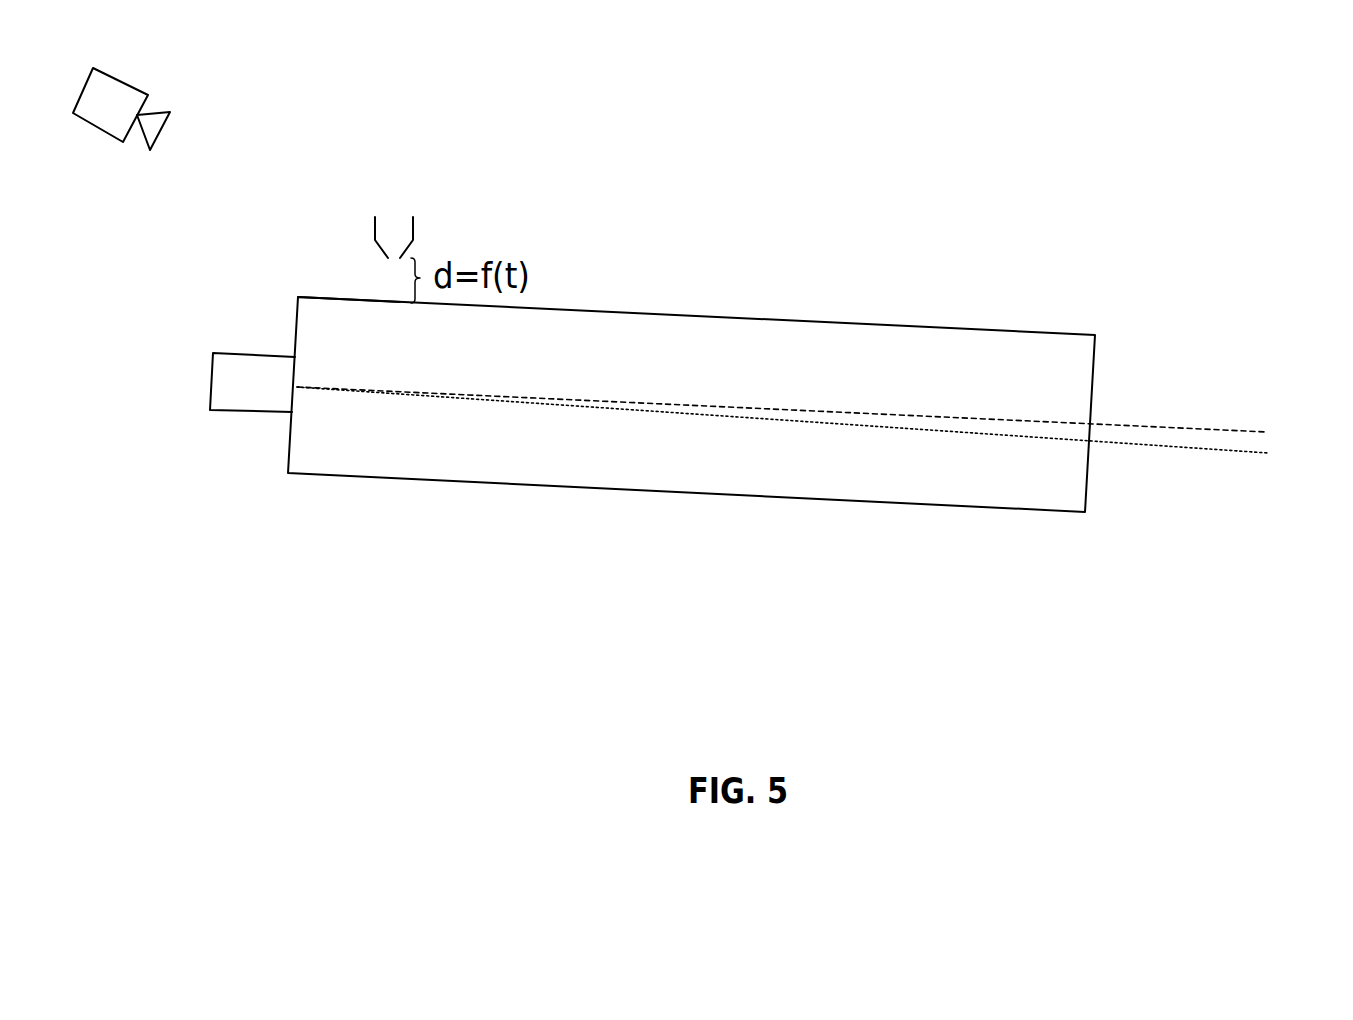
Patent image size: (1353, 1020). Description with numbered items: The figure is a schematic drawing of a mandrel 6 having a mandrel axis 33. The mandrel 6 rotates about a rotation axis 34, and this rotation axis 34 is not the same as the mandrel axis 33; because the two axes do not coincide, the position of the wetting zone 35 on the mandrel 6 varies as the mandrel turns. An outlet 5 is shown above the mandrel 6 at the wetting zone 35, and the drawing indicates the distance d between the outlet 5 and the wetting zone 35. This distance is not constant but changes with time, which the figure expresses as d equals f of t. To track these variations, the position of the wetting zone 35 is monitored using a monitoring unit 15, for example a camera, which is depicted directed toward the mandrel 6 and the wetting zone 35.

The monitoring unit 15 is at (195, 104).
The mandrel 6 is at (903, 303).
The mandrel axis 33 is at (1245, 427).
The rotation axis 34 is at (1238, 460).
The outlet 5 is at (383, 265).
The wetting zone 35 is at (377, 295).